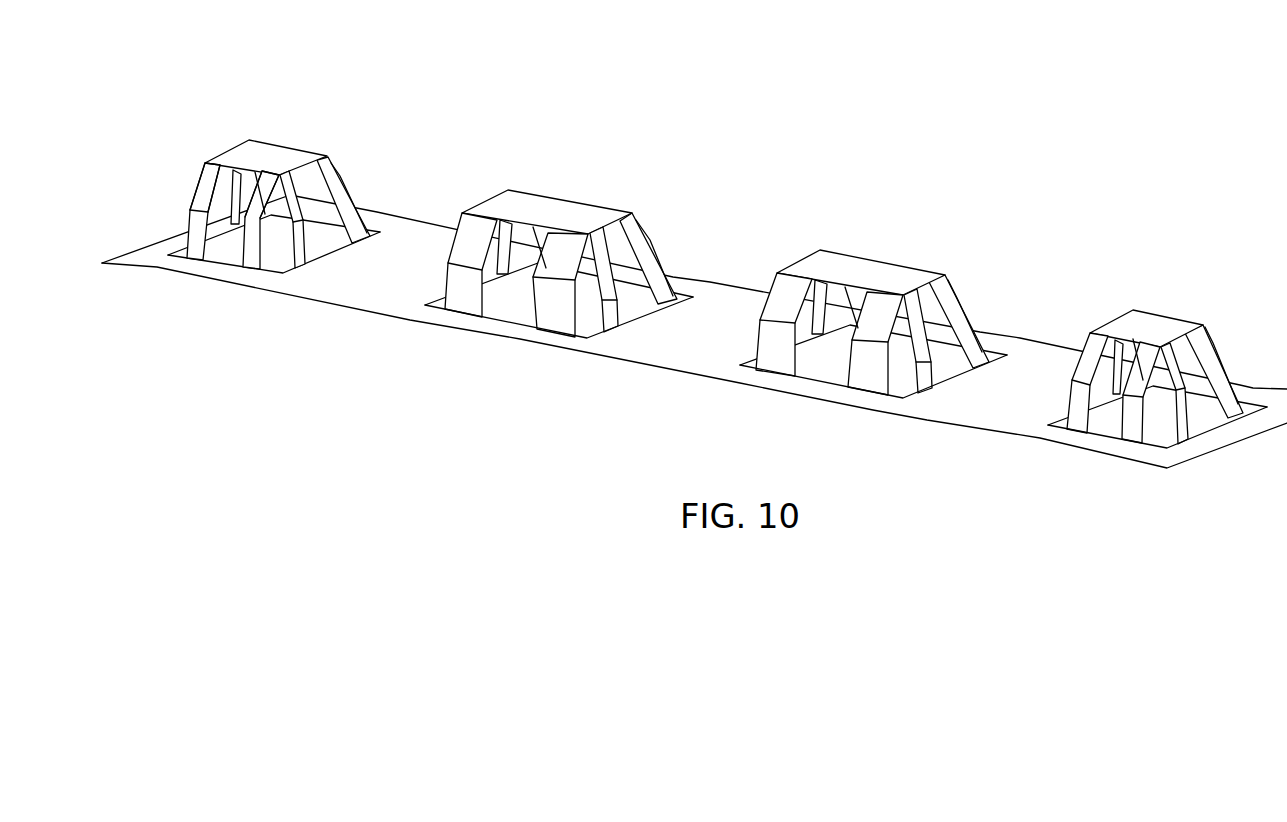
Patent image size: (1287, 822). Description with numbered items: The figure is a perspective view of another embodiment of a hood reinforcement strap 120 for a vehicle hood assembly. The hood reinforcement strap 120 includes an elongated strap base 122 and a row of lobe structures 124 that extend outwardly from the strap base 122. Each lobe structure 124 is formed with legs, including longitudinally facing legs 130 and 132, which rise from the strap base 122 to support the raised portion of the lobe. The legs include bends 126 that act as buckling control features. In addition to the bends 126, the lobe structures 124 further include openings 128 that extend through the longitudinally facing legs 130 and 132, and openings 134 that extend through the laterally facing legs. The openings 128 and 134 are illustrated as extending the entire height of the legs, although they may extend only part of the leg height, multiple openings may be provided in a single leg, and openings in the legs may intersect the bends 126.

The hood reinforcement strap 120 is at (694, 246).
The strap base 122 is at (715, 300).
The lobe structures 124 is at (282, 197).
The bends 126 is at (189, 209).
The openings 128 is at (282, 222).
The longitudinally facing leg 130 is at (274, 292).
The longitudinally facing leg 132 is at (325, 148).
The openings 134 is at (270, 158).